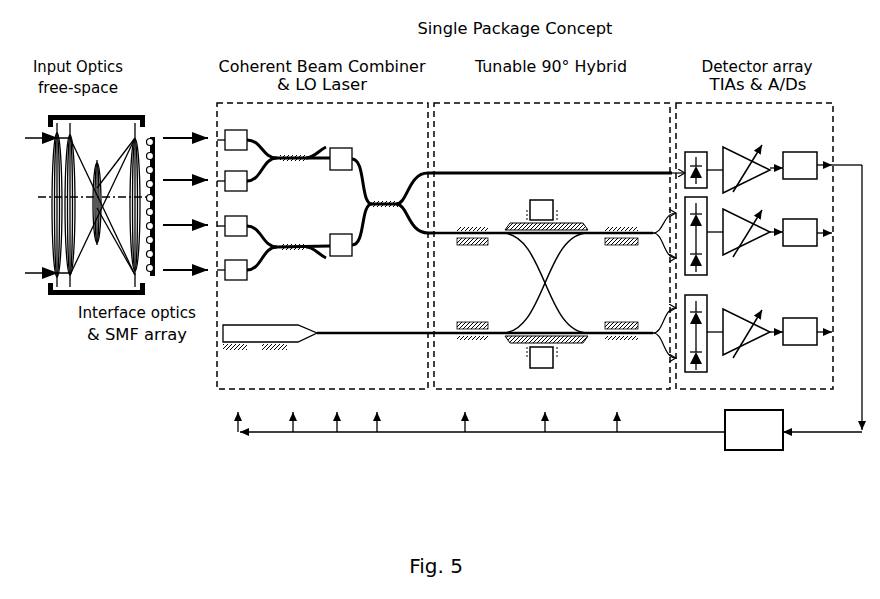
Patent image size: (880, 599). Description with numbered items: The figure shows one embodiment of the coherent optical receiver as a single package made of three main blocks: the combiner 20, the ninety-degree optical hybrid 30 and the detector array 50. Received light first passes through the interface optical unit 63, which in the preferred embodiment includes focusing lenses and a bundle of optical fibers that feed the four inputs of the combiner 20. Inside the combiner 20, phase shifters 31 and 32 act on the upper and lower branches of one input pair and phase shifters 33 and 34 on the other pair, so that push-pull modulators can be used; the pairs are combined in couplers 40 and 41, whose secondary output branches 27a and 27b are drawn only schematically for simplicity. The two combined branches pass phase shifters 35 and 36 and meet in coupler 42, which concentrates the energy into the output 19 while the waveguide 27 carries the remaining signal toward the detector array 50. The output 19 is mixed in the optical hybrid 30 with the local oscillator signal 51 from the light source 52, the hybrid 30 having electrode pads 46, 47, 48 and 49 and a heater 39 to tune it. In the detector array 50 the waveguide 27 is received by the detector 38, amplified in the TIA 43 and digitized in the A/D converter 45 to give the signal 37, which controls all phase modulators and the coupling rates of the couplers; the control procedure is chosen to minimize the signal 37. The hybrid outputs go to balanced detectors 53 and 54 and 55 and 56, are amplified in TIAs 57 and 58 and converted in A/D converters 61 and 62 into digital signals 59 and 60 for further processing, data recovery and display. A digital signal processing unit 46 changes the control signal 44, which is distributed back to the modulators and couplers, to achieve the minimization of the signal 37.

The interface optical unit 63 is at (116, 248).
The combiner module 20 is at (322, 246).
The phase shifter 31 is at (233, 130).
The phase shifter 32 is at (243, 187).
The phase shifter 33 is at (243, 223).
The phase shifter 34 is at (243, 277).
The coupler 40 is at (417, 260).
The coupler 41 is at (288, 248).
The output branch 27a is at (321, 139).
The output branch 27b is at (313, 267).
The phase shifter 35 is at (353, 158).
The phase shifter 36 is at (353, 248).
The coupler 42 is at (375, 202).
The output 19 is at (415, 231).
The waveguide 27 is at (540, 179).
The light source 52 is at (270, 329).
The local oscillator signal 51 is at (375, 323).
The optical hybrid 30 is at (555, 246).
The digital signal processing unit 46 is at (619, 329).
The electrode pad 47 is at (471, 322).
The electrode pad 48 is at (621, 226).
The electrode pad 49 is at (621, 322).
The digital signal processing unit 39 is at (546, 214).
The detector array 50 is at (754, 246).
The detector 38 is at (696, 153).
The TIA 43 is at (745, 158).
The A/D converter 45 is at (800, 154).
The signal 37 is at (822, 286).
The detector 53 is at (706, 234).
The detector 54 is at (709, 258).
The TIA 57 is at (745, 226).
The A/D converter 61 is at (800, 223).
The digital signal 59 is at (837, 235).
The detector 55 is at (706, 330).
The detector 56 is at (712, 358).
The TIA 58 is at (745, 328).
The A/D converter 62 is at (800, 323).
The digital signal 60 is at (837, 330).
The control signal 44 is at (481, 422).